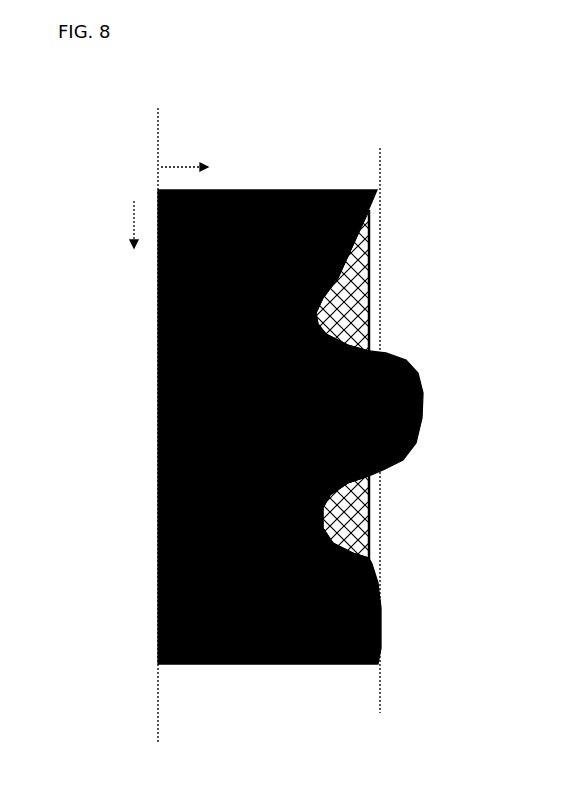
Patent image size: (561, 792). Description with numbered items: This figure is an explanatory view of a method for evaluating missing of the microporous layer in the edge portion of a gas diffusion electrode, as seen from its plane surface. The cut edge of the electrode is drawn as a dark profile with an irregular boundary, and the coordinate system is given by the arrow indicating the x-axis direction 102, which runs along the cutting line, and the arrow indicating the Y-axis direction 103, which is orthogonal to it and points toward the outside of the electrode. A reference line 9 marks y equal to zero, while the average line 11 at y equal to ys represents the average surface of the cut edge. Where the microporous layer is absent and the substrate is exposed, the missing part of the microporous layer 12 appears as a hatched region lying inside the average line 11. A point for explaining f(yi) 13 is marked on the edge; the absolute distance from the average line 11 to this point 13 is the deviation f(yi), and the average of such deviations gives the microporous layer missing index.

The reference line 9 is at (152, 690).
The average line 11 is at (374, 697).
The missing part of microporous layer 12 is at (355, 285).
The point for explaining f(yi) 13 is at (360, 540).
The arrow indicating x-axis direction 102 is at (124, 218).
The arrow indicating Y-axis direction 103 is at (170, 155).